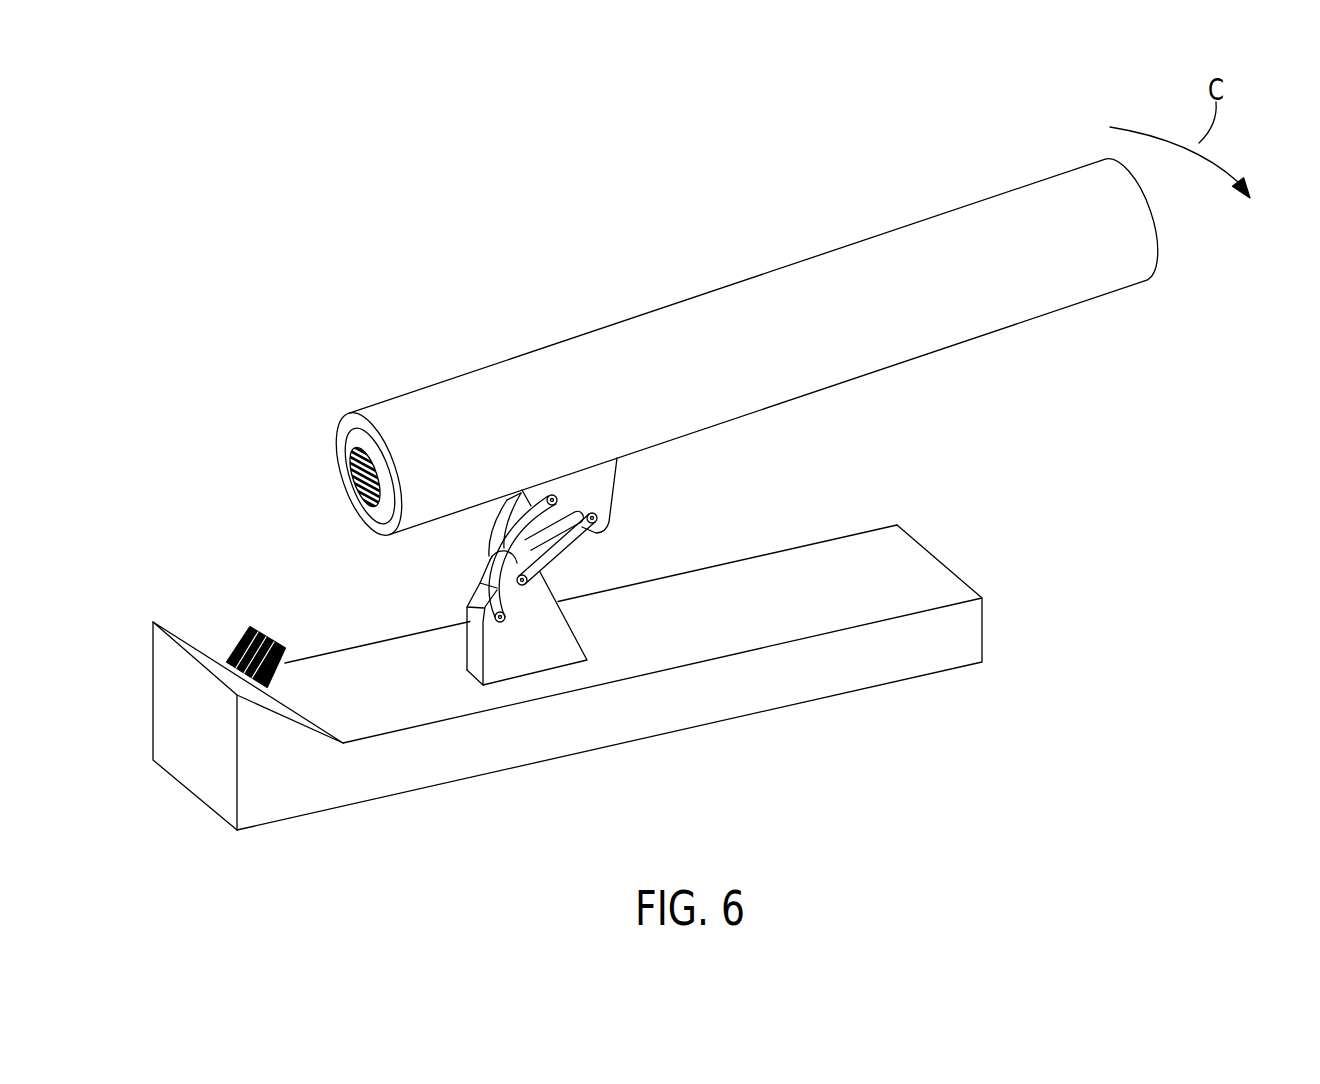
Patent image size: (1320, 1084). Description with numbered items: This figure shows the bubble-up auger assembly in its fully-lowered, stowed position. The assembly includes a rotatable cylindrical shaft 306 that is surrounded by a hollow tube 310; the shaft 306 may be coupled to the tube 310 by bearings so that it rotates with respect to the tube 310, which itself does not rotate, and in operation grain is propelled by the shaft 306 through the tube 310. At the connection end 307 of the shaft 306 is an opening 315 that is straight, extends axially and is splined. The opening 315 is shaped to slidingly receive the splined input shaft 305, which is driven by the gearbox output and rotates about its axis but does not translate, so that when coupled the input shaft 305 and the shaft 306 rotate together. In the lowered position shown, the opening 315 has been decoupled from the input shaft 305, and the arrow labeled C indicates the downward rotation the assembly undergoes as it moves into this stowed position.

The input shaft 305 is at (245, 635).
The rotatable cylindrical shaft 306 is at (389, 471).
The connection end 307 is at (338, 470).
The hollow tube 310 is at (872, 340).
The opening 315 is at (378, 500).